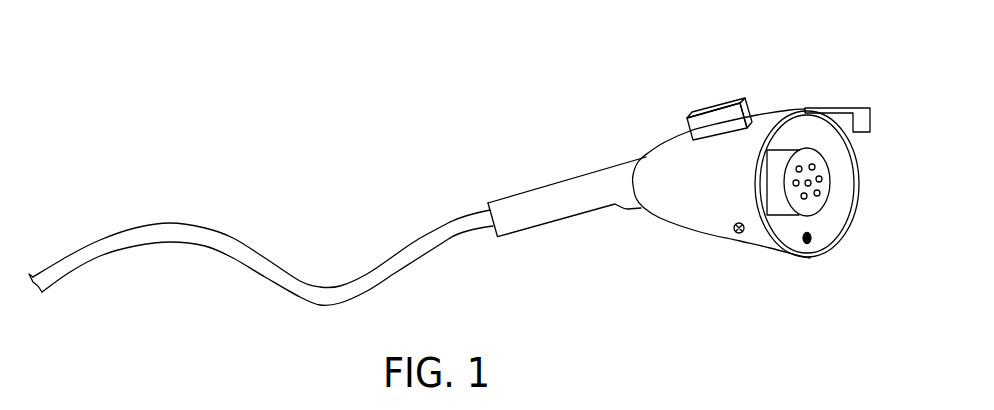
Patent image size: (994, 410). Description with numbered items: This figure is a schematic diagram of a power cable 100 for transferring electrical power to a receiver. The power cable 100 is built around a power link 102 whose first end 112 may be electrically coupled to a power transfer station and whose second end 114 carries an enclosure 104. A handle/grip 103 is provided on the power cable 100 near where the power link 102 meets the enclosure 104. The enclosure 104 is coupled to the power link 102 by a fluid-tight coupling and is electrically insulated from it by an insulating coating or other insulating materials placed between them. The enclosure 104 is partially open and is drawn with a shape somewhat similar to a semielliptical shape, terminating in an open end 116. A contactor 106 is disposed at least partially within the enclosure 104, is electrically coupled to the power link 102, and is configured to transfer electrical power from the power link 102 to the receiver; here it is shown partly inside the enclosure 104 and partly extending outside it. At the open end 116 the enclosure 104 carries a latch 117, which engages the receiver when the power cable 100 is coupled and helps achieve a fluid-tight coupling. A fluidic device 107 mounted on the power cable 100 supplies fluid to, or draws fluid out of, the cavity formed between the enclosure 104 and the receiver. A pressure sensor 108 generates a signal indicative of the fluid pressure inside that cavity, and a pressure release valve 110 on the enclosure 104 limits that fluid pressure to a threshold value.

The power cable 100 is at (192, 51).
The power link 102 is at (175, 229).
The handle/grip 103 is at (535, 197).
The enclosure 104 is at (660, 155).
The contactor 106 is at (827, 192).
The fluidic device 107 is at (718, 105).
The pressure sensor 108 is at (812, 241).
The pressure release valve 110 is at (736, 232).
The first end 112 is at (45, 283).
The second end 114 is at (483, 223).
The open end 116 is at (860, 170).
The latch 117 is at (847, 108).